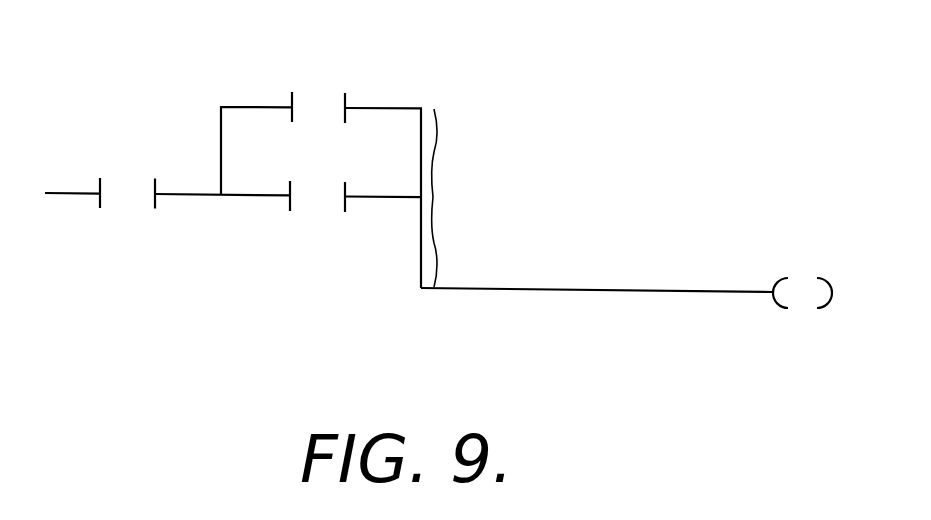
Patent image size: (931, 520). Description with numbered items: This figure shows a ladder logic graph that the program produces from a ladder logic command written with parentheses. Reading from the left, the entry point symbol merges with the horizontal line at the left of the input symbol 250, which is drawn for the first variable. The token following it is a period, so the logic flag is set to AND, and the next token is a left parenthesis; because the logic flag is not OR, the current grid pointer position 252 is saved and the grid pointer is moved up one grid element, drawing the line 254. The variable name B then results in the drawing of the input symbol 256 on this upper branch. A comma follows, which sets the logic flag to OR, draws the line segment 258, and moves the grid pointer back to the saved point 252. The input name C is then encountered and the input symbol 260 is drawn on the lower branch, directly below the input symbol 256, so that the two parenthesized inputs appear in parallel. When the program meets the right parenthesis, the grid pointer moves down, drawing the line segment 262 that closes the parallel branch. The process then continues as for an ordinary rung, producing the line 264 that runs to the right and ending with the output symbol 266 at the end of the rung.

The input symbol 250 is at (129, 226).
The current grid pointer position 252 is at (221, 197).
The line 254 is at (221, 148).
The input symbol 256 is at (322, 76).
The line segment 258 is at (434, 152).
The input symbol 260 is at (303, 230).
The line segment 262 is at (434, 243).
The line 264 is at (573, 289).
The output symbol 266 is at (830, 299).